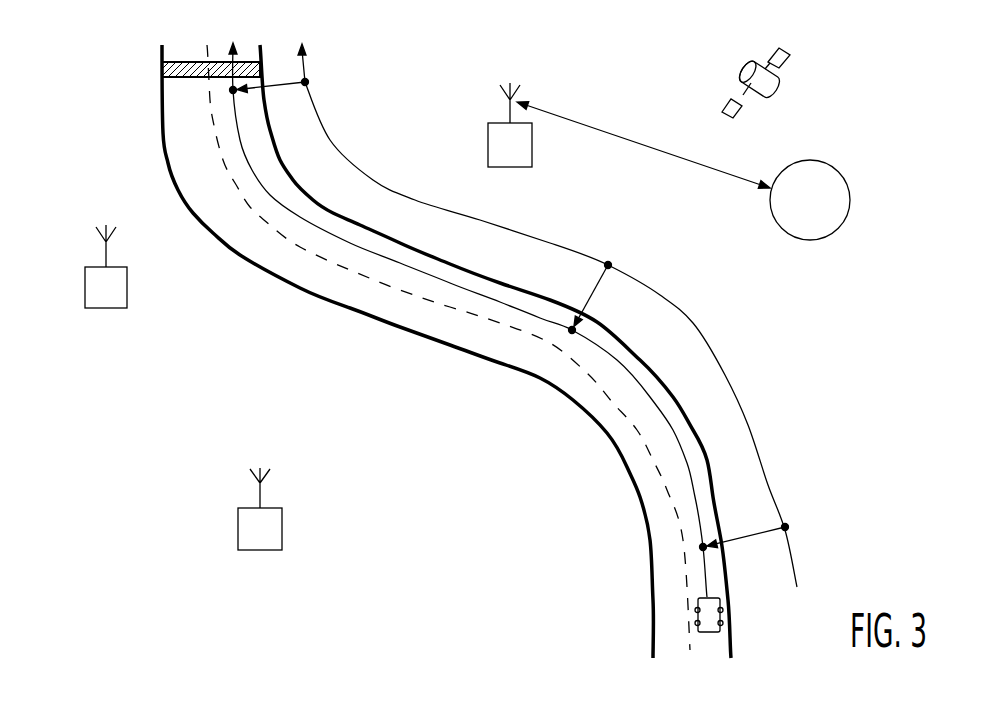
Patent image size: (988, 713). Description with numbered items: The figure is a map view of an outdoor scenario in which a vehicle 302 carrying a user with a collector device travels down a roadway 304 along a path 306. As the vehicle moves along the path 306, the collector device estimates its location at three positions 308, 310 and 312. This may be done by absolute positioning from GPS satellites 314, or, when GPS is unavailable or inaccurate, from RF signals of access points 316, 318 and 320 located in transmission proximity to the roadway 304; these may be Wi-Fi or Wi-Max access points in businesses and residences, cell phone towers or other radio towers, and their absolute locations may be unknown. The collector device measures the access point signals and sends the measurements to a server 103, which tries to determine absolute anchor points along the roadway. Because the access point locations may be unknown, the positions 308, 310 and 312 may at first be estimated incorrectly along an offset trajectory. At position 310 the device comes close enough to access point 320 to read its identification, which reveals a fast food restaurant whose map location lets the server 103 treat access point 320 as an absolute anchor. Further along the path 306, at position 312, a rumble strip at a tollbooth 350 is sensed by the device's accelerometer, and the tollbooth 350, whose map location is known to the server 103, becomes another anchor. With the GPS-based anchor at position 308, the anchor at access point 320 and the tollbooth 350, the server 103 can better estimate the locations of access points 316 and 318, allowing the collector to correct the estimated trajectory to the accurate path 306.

The vehicle 302 is at (716, 598).
The roadway 304 is at (674, 394).
The path 306 is at (704, 565).
The position 308 is at (700, 547).
The position 310 is at (570, 332).
The position 312 is at (233, 90).
The GPS satellites 314 is at (787, 91).
The access point 316 is at (238, 527).
The access point 318 is at (85, 283).
The access point 320 is at (488, 140).
The tollbooth 350 is at (164, 65).
The server 103 is at (797, 222).